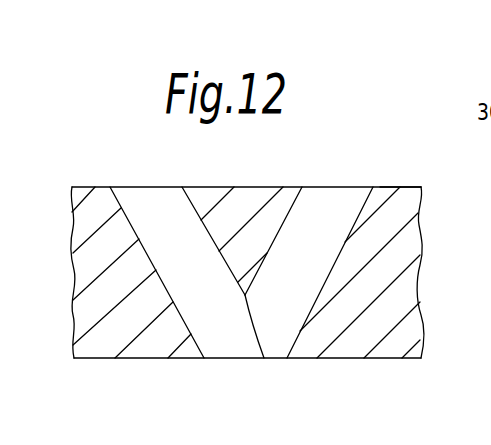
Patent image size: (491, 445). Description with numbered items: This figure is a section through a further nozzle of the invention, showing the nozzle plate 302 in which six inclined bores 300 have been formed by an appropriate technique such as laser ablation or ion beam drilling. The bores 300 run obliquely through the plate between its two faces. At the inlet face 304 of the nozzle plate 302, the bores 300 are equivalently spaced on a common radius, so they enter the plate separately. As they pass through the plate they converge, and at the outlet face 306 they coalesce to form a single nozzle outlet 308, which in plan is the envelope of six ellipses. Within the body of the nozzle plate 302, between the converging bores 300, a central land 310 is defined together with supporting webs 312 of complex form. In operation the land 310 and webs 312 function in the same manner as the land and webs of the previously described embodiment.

The inclined bores 300 is at (196, 242).
The nozzle plate 302 is at (89, 184).
The inlet face 304 is at (393, 187).
The outlet face 306 is at (135, 358).
The nozzle outlet 308 is at (227, 358).
The central land 310 is at (264, 358).
The supporting webs 312 is at (162, 187).